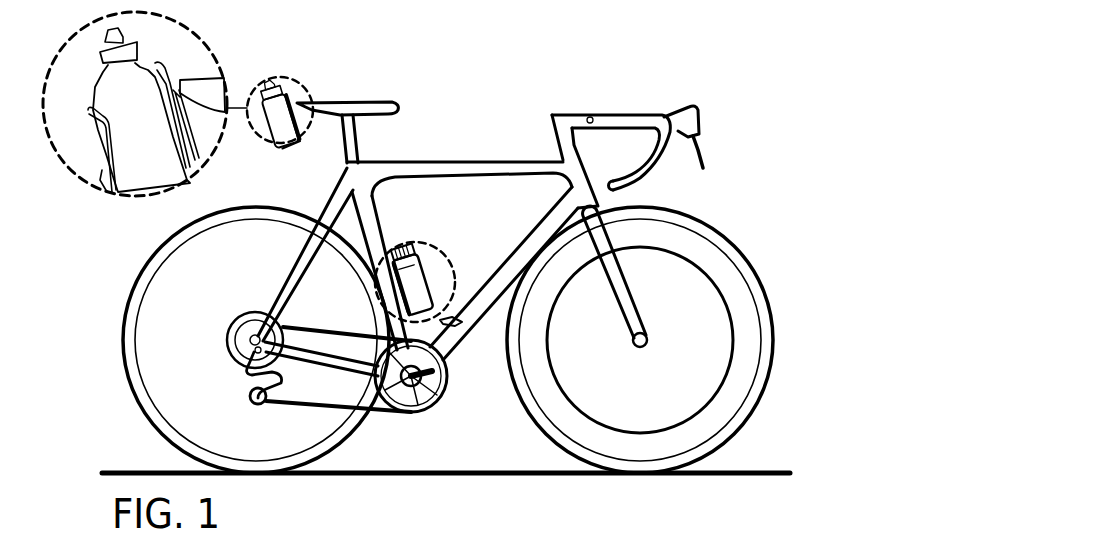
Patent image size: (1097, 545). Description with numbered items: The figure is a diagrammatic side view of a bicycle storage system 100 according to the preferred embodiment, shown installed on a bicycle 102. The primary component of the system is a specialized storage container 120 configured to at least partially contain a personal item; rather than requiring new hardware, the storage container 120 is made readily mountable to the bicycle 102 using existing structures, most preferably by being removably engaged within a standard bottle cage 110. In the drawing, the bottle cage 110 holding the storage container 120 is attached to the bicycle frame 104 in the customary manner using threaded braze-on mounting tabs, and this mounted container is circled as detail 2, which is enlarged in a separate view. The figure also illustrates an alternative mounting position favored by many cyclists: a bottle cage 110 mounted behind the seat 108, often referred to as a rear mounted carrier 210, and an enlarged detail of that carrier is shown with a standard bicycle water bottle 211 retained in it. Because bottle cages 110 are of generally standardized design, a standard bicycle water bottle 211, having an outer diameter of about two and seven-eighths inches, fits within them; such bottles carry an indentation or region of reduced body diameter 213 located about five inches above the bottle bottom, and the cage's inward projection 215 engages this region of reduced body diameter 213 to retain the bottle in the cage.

The storage container detail view 2 is at (424, 242).
The bicycle storage system 100 is at (366, 293).
The bicycle 102 is at (420, 150).
The bicycle frame 104 is at (517, 161).
The seat 108 is at (343, 103).
The bottle cage 110 is at (107, 188).
The storage container 120 is at (420, 259).
The rear mounted carrier 210 is at (126, 209).
The bicycle water bottle 211 is at (84, 62).
The region of reduced body diameter 213 is at (156, 60).
The inward projection 215 is at (165, 66).